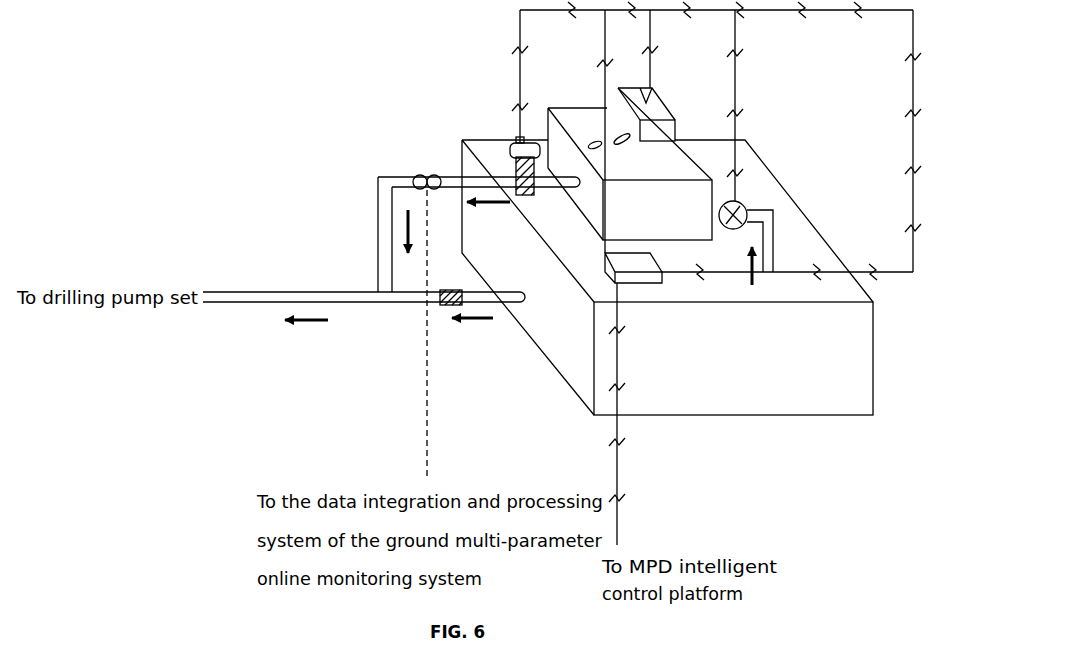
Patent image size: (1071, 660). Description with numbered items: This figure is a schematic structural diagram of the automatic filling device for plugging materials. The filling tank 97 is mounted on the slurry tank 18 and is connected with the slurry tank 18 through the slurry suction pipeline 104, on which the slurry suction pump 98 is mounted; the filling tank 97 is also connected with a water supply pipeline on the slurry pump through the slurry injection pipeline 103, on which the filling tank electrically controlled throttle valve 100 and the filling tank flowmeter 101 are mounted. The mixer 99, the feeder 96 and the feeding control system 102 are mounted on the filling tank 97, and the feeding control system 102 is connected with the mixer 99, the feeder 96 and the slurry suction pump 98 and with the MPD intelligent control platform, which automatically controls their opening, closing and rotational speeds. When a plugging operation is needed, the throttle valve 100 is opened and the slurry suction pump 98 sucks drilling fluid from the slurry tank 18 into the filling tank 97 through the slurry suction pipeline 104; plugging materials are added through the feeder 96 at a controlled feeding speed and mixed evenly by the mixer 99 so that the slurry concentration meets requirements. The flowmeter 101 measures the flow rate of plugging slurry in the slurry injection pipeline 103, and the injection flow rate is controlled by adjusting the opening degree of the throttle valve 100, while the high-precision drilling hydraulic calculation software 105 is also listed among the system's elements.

The slurry tank 18 is at (875, 360).
The feeder 96 is at (670, 103).
The filling tank 97 is at (607, 218).
The slurry suction pump 98 is at (745, 208).
The mixer 99 is at (607, 121).
The filling tank electrically controlled throttle valve 100 is at (527, 196).
The filling tank flowmeter 101 is at (423, 172).
The feeding control system 102 is at (640, 286).
The slurry injection pipeline 103 is at (376, 215).
The slurry suction pipeline 104 is at (770, 268).
The high-precision drilling hydraulic calculation software 105 is at (446, 308).